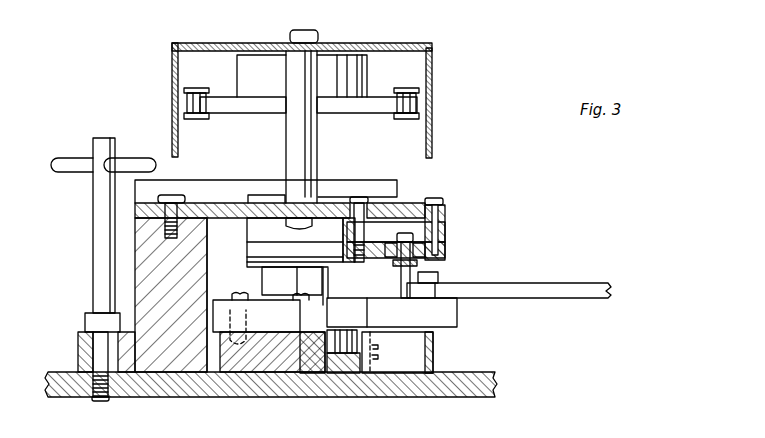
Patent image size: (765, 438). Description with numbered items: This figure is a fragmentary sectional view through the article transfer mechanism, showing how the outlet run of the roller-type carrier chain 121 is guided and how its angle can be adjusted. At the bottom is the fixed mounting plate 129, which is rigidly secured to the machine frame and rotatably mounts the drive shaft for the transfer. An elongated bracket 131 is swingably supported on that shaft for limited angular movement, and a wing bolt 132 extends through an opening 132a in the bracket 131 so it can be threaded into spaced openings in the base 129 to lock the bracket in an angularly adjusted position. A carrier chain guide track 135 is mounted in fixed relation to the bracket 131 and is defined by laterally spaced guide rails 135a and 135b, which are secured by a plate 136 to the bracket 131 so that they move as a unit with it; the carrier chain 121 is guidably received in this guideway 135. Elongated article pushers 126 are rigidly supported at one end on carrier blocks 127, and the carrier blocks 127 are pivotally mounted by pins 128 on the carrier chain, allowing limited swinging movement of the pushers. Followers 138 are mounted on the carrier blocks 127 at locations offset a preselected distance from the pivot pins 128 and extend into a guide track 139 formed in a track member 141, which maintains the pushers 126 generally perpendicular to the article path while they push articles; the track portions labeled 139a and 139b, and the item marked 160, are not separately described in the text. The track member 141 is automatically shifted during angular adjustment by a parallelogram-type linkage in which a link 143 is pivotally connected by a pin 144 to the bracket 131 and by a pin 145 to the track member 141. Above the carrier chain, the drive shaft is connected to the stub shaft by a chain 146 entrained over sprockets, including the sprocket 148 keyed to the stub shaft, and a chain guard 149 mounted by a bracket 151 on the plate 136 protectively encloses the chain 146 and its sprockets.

The endless chain carrier 121 is at (443, 223).
The article pusher 126 is at (515, 283).
The carrier block 127 is at (450, 310).
The pin 128 is at (397, 285).
The mounting plate 129 is at (430, 385).
The bracket 131 is at (158, 330).
The wing bolt 132 is at (100, 227).
The opening 132a is at (87, 350).
The carrier chain guide track 135 is at (418, 258).
The guide rail 135a is at (395, 245).
The guide rail 135b is at (443, 245).
The plate 136 is at (410, 198).
The follower 138 is at (337, 345).
The guide track 139 is at (350, 353).
The slide block part 139a is at (320, 352).
The slide block end 139b is at (420, 353).
The track member 141 is at (278, 360).
The link 143 is at (260, 288).
The pin 144 is at (261, 313).
The pin 145 is at (248, 338).
The chain 146 is at (417, 105).
The sprocket 148 is at (260, 105).
The chain guard 149 is at (433, 130).
The bracket 151 is at (307, 138).
The sheet mark 160 is at (654, 429).